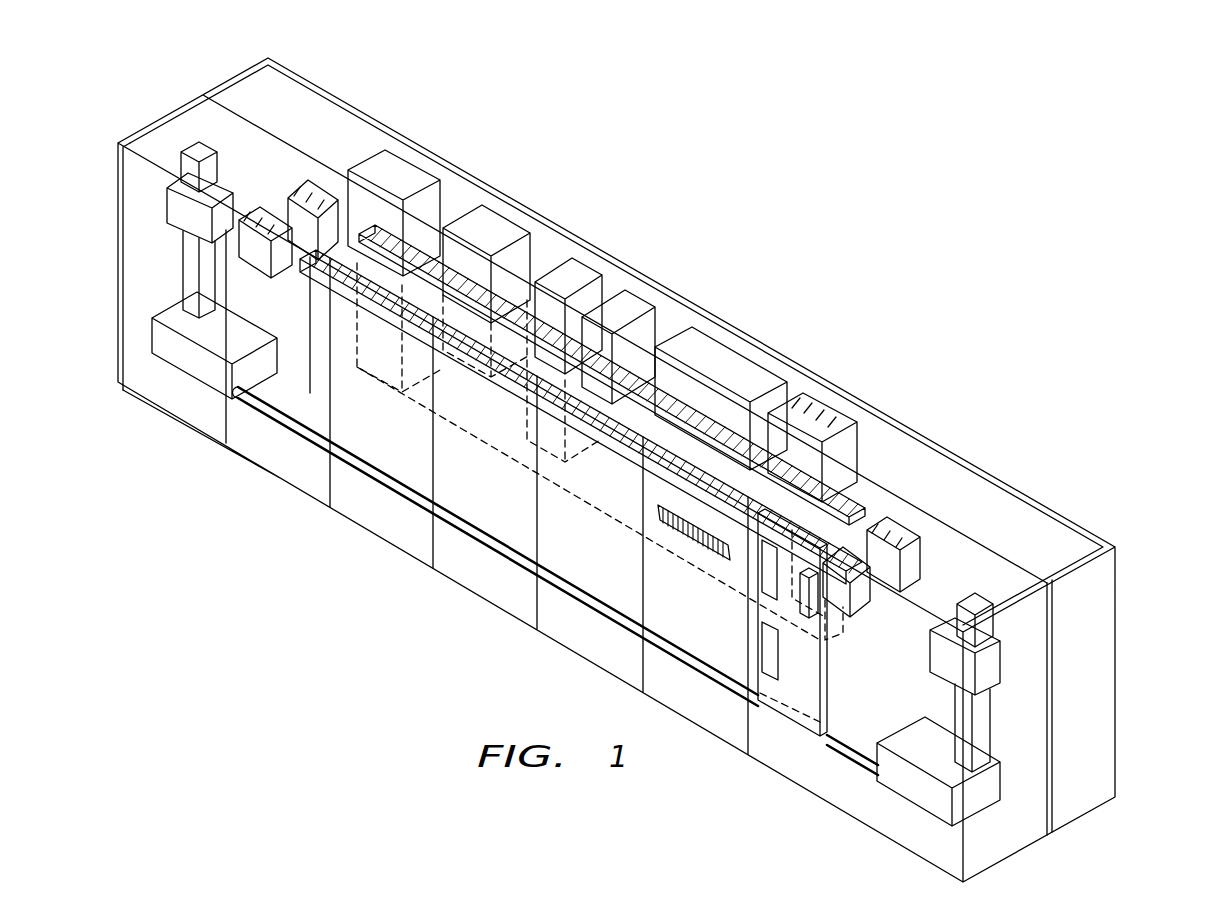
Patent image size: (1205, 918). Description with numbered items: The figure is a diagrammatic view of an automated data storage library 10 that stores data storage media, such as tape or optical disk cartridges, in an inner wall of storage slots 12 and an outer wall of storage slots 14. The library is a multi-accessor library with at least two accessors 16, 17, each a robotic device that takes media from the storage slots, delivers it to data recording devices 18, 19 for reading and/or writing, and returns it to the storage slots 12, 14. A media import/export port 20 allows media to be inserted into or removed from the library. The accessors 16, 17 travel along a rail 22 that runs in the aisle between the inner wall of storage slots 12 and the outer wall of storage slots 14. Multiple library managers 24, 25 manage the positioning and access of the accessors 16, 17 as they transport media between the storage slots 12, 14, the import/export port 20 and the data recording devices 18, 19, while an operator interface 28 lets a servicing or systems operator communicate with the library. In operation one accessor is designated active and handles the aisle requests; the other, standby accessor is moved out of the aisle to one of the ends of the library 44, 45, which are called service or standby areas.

The automated data storage library 10 is at (746, 199).
The inner wall of storage slots 12 is at (443, 287).
The outer wall of storage slots 14 is at (410, 440).
The accessor 16 is at (180, 222).
The accessor 17 is at (995, 662).
The data recording device 18 is at (578, 268).
The data recording device 19 is at (632, 298).
The media import/export port 20 is at (805, 695).
The rail 22 is at (500, 540).
The library manager 24 is at (402, 177).
The library manager 25 is at (818, 416).
The operator interface 28 is at (493, 232).
The end of the library 44 is at (200, 98).
The end of the library 45 is at (1117, 612).